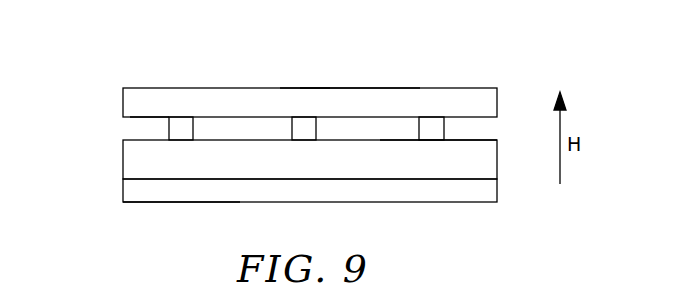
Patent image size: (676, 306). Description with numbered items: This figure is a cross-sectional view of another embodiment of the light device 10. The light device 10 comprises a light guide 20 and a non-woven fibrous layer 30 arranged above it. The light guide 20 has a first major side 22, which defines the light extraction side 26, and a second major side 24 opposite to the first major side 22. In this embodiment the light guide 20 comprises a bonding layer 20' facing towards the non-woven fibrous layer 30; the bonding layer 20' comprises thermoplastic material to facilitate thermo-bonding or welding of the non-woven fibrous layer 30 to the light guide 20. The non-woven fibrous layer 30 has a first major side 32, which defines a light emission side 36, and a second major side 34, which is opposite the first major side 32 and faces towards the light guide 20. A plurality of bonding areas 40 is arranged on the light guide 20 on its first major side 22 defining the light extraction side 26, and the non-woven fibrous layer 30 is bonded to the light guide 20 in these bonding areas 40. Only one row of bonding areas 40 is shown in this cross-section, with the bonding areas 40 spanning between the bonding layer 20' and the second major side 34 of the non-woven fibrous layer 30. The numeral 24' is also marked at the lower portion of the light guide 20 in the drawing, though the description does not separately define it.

The light device 10 is at (122, 57).
The non-woven fibrous layer 30 is at (123, 99).
The first major side 32 is at (385, 88).
The light emission side 36 is at (305, 88).
The bonding areas 40 is at (187, 128).
The first major side 22 is at (142, 139).
The bonding layer 20' is at (277, 159).
The light extraction side 26 is at (483, 139).
The second major side 34 is at (400, 117).
The light guide 20 is at (310, 211).
The second major side 24 is at (126, 220).
The bottom layer surface 24' is at (210, 214).